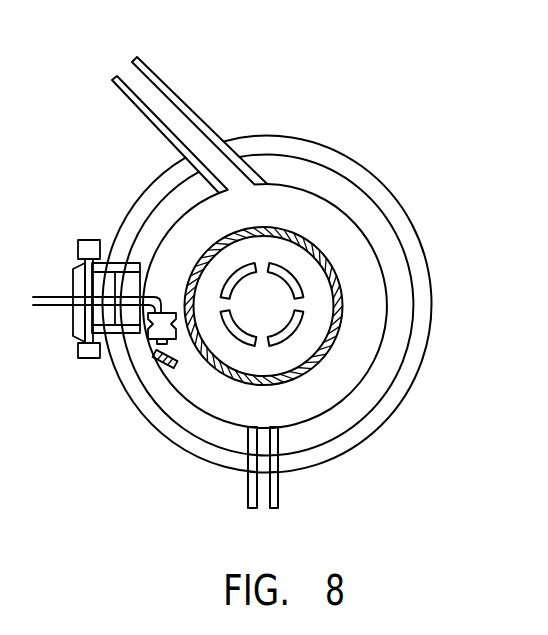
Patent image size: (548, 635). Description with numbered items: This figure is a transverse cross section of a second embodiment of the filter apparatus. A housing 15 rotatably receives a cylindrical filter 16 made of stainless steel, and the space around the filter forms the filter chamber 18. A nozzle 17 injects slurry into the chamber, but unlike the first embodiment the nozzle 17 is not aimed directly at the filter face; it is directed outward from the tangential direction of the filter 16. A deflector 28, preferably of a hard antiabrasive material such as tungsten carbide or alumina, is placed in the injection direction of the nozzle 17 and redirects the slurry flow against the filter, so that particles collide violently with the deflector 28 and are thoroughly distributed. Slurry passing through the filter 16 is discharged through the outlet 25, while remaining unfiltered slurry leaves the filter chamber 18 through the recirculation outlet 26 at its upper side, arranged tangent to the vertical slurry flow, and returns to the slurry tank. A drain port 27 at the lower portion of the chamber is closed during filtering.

The housing 15 is at (353, 185).
The cylindrical filter 16 is at (337, 280).
The nozzle 17 is at (151, 341).
The filter chamber 18 is at (189, 229).
The outlet 25 is at (293, 327).
The recirculation outlet 26 is at (168, 110).
The drain port 27 is at (295, 467).
The deflector 28 is at (168, 370).